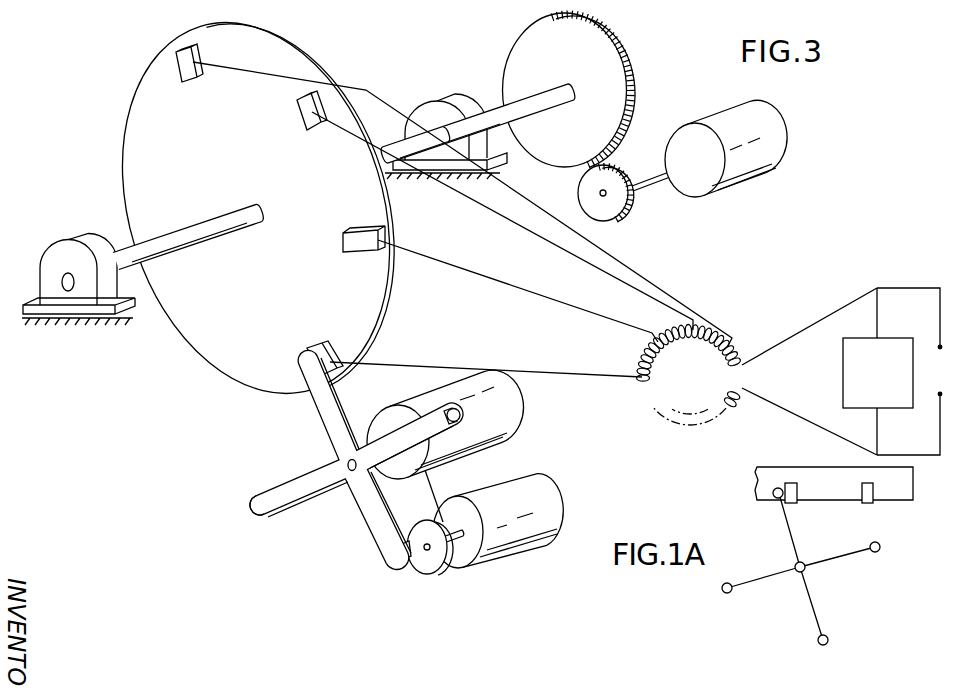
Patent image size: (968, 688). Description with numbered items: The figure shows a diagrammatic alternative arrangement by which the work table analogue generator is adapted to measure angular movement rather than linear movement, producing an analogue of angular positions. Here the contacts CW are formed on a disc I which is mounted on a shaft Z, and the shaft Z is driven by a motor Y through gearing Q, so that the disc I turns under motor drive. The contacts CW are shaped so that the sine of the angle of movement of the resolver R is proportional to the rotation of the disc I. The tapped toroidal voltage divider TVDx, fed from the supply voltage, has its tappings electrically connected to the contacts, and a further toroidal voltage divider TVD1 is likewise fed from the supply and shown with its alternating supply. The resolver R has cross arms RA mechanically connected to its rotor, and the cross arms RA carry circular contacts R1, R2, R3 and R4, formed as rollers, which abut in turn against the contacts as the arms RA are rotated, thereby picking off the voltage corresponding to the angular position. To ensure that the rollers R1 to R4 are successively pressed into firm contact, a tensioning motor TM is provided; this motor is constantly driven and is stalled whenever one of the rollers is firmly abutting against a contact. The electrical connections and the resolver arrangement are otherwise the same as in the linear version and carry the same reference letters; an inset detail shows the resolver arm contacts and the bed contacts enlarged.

The disc I is at (380, 290).
The shaft Z is at (213, 213).
The contacts CW is at (306, 133).
The circular contact R1 is at (307, 362).
The cross arms RA is at (328, 412).
The circular contact R2 is at (458, 411).
The resolver R is at (512, 398).
The circular contact R3 is at (408, 558).
The circular contact R4 is at (260, 498).
The tensioning motor TM is at (525, 547).
The gearing Q is at (571, 163).
The motor Y is at (712, 118).
The toroidal voltage divider TVDx is at (757, 371).
The toroidal voltage divider TVD1 is at (895, 371).